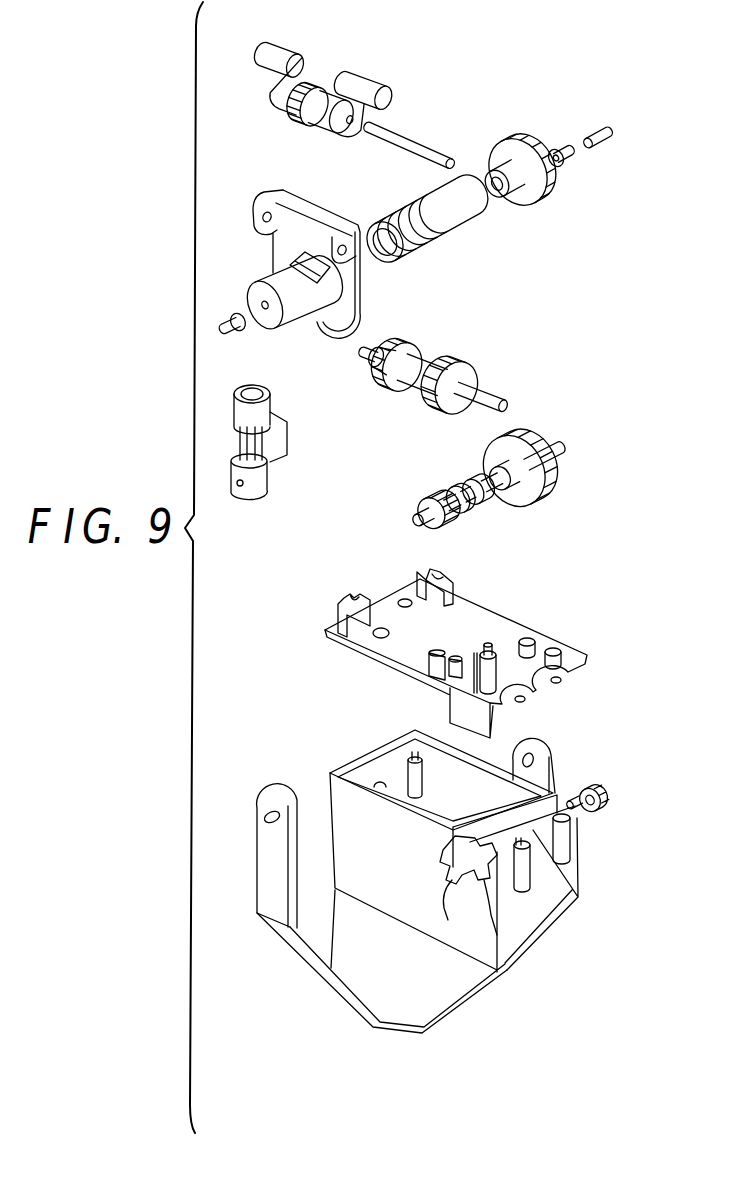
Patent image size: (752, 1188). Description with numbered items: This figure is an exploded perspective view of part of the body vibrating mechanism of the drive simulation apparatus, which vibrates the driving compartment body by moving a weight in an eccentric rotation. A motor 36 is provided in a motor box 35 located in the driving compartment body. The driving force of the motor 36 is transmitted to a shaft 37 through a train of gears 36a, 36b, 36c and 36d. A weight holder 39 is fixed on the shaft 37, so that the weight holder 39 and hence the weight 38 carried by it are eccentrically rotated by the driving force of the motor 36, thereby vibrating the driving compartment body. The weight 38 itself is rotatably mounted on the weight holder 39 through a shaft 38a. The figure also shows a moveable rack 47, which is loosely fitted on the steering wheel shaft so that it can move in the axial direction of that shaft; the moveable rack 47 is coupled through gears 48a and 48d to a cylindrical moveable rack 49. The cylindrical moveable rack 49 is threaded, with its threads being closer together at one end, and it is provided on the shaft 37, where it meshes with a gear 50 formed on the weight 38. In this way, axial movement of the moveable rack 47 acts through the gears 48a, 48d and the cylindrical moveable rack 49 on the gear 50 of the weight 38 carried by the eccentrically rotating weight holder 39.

The motor box 35 is at (518, 943).
The motor 36 is at (530, 838).
The gear 36a is at (602, 801).
The gear 36b is at (550, 488).
The gear 36c is at (450, 520).
The gear 36d is at (547, 200).
The shaft 37 is at (607, 143).
The weight 38 is at (378, 85).
The shaft 38a is at (410, 146).
The weight holder 39 is at (295, 313).
The moveable rack 47 is at (277, 440).
The gear 48a is at (447, 412).
The gear 48d is at (395, 388).
The cylindrical moveable rack 49 is at (437, 243).
The gear 50 is at (324, 87).